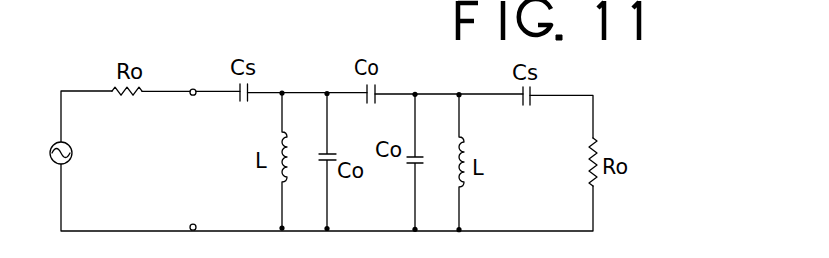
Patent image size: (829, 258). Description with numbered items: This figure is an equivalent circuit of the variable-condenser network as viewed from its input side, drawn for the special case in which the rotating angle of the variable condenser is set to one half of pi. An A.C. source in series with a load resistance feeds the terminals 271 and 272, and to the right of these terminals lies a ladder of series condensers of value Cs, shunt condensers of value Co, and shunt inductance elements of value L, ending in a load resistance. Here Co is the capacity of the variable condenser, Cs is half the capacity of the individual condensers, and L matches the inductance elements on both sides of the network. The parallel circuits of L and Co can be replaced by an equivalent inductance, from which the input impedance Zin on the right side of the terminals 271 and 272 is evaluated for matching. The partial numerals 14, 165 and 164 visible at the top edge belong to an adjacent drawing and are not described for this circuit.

The terminal 271 is at (189, 78).
The terminal 272 is at (213, 241).
The partial numeral from adjacent figure 14 is at (57, 5).
The partial numeral from adjacent figure 165 is at (246, 9).
The partial numeral from adjacent figure 164 is at (367, 9).